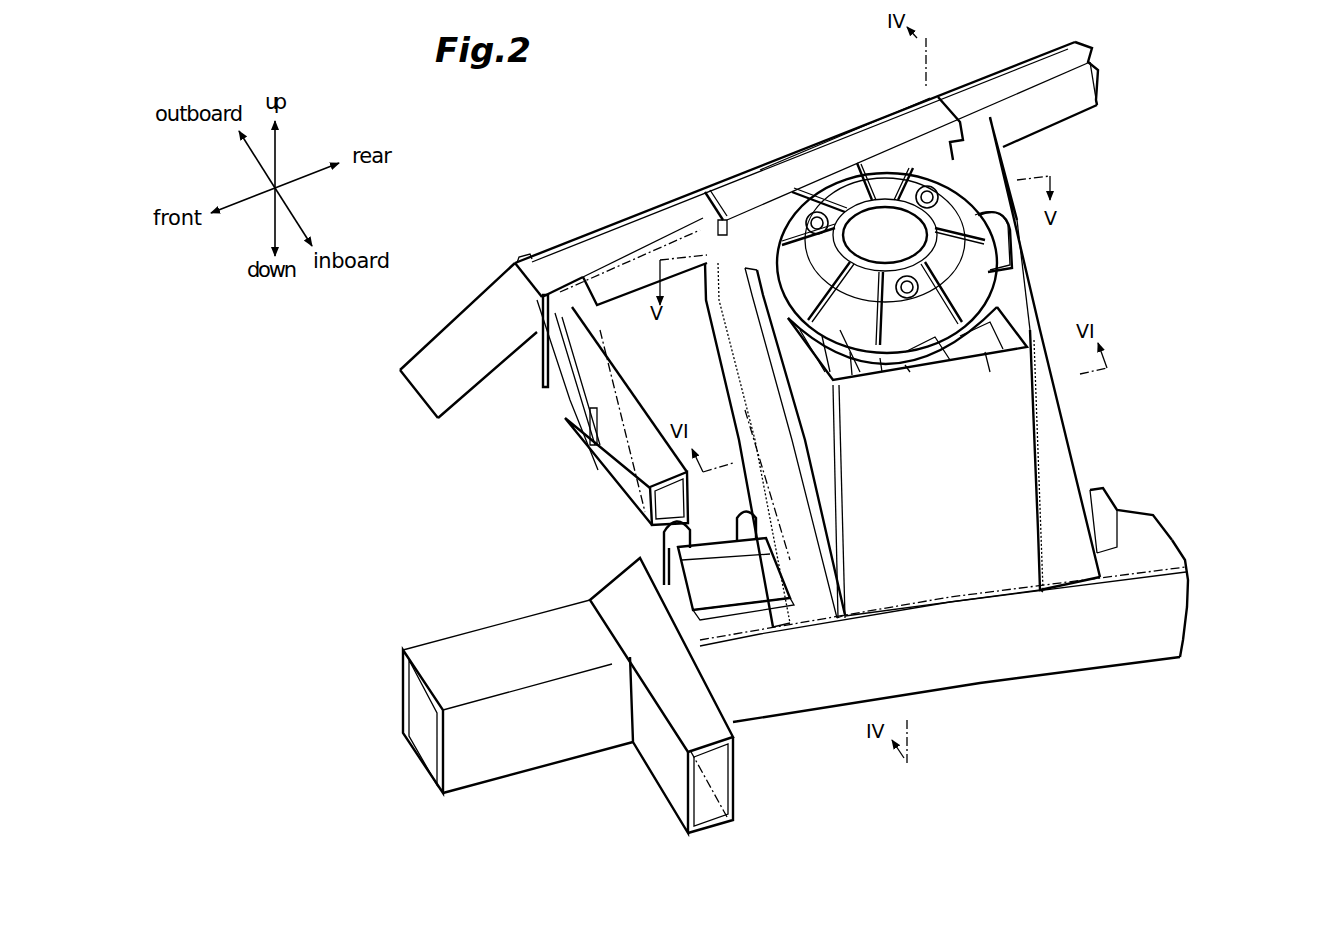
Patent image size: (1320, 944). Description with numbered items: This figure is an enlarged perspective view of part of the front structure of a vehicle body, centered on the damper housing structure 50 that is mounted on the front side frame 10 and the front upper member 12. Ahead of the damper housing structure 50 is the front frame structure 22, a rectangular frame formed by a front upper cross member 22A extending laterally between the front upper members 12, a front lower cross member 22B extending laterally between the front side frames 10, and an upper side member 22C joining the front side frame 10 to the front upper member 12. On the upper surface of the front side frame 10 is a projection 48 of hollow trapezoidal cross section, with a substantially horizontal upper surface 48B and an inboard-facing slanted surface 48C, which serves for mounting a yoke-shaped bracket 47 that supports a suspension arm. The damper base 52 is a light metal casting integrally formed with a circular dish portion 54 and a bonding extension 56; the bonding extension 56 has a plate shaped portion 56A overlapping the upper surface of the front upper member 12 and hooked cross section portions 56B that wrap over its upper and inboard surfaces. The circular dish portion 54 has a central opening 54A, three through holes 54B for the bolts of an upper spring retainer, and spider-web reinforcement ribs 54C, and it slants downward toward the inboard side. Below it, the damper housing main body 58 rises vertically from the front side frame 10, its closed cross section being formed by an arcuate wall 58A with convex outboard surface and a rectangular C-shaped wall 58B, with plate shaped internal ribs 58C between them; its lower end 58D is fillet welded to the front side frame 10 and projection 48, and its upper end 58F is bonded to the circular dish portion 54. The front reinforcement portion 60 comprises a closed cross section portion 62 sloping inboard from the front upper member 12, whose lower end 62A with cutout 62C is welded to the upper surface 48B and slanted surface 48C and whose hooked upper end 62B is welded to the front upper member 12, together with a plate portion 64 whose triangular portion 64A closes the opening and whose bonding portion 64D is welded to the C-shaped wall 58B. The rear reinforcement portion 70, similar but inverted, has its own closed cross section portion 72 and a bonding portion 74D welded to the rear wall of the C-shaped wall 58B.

The front side frame 10 is at (1018, 660).
The front upper member 12 is at (650, 238).
The front frame structure 22 is at (556, 420).
The front upper cross member 22A is at (622, 430).
The front lower cross member 22B is at (660, 753).
The upper side member 22C is at (580, 482).
The bracket 47 is at (645, 530).
The projection 48 is at (725, 585).
The upper surface 48B is at (666, 560).
The slanted surface 48C is at (710, 598).
The damper housing structure 50 is at (672, 146).
The damper base 52 is at (858, 163).
The circular dish portion 54 is at (973, 281).
The central opening 54A is at (910, 249).
The through holes 54B is at (793, 193).
The reinforcement ribs 54C is at (992, 242).
The bonding extension 56 is at (873, 122).
The plate shaped portion 56A is at (793, 156).
The hooked cross section portion 56B is at (716, 187).
The damper housing main body 58 is at (1010, 510).
The arcuate wall 58A is at (1020, 320).
The rectangular C-shaped wall 58B is at (1023, 447).
The internal ribs 58C is at (870, 393).
The lower end 58D is at (933, 592).
The upper end 58F is at (957, 362).
The front reinforcement portion 60 is at (724, 311).
The closed cross section portion 62 is at (762, 427).
The lower end 62A is at (797, 603).
The upper end 62B is at (707, 255).
The cutout 62C is at (800, 560).
The plate portion 64 is at (776, 380).
The triangular portion 64A is at (780, 358).
The bonding portion 64D is at (843, 590).
The rear reinforcement portion 70 is at (1057, 469).
The closed cross section portion 72 is at (1008, 272).
The bonding portion 74D is at (1048, 568).